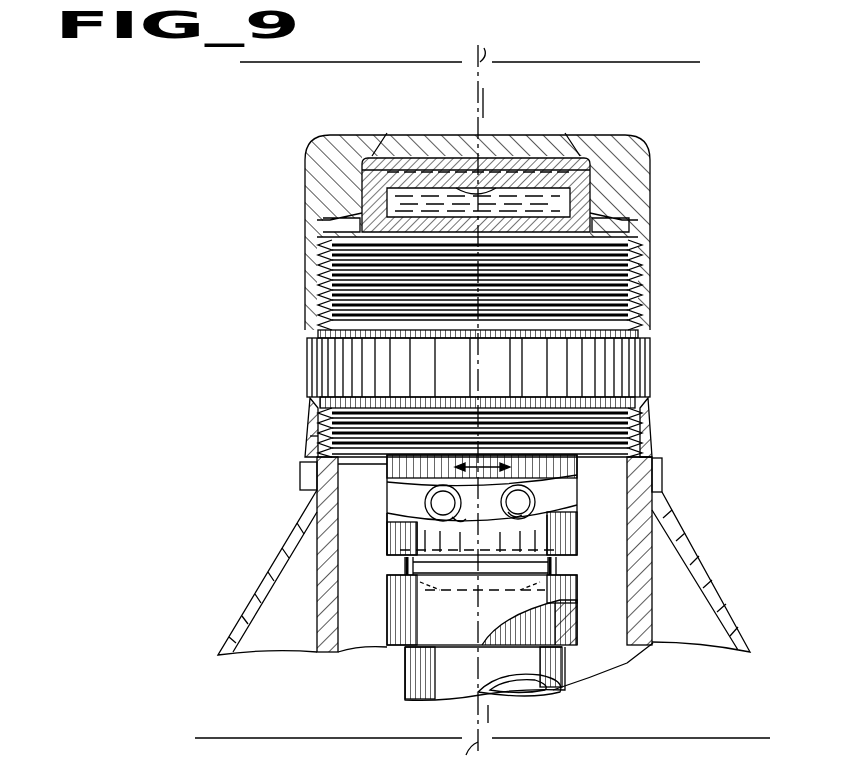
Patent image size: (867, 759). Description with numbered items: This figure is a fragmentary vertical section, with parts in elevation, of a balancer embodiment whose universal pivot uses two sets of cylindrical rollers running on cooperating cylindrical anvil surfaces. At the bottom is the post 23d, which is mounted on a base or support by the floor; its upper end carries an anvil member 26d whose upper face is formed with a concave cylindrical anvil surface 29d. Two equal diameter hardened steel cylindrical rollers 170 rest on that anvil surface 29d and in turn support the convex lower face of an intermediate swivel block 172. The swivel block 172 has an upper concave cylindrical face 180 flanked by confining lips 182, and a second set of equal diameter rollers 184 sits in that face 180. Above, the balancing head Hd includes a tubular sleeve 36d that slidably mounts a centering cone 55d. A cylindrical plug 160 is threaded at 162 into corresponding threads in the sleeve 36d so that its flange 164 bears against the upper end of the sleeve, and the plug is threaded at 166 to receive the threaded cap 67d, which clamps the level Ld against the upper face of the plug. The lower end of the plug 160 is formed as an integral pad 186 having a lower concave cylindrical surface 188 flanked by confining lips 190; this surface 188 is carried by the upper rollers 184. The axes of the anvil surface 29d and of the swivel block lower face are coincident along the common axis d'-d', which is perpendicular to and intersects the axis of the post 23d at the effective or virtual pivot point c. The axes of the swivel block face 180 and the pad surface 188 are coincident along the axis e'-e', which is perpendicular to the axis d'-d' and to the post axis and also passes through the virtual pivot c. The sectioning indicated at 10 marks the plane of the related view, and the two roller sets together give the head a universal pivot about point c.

The balancing head Hd is at (510, 283).
The level Ld is at (540, 168).
The threaded cap 67d is at (650, 206).
The plug threads for cap 166 is at (632, 282).
The cylindrical plug 160 is at (516, 386).
The flange 164 is at (650, 360).
The plug threads for sleeve 162 is at (627, 422).
The tubular sleeve 36d is at (330, 440).
The confining lips 190 is at (655, 470).
The confining lips 182 is at (503, 573).
The centering cone 55d is at (724, 558).
The integral pad 186 is at (345, 462).
The intermediate swivel block 172 is at (429, 505).
The upper concave cylindrical face 180 is at (408, 514).
The lower concave cylindrical surface 188 is at (553, 485).
The second set of rollers 184 is at (478, 521).
The cylindrical anvil surface 29d is at (556, 572).
The cylindrical rollers 170 is at (468, 577).
The anvil member 26d is at (402, 648).
The post 23d is at (446, 675).
The section line indicator 10 is at (500, 705).
The virtual pivot point c is at (477, 394).
The common axis d'- d' is at (476, 59).
The common axis e'- e' is at (483, 739).